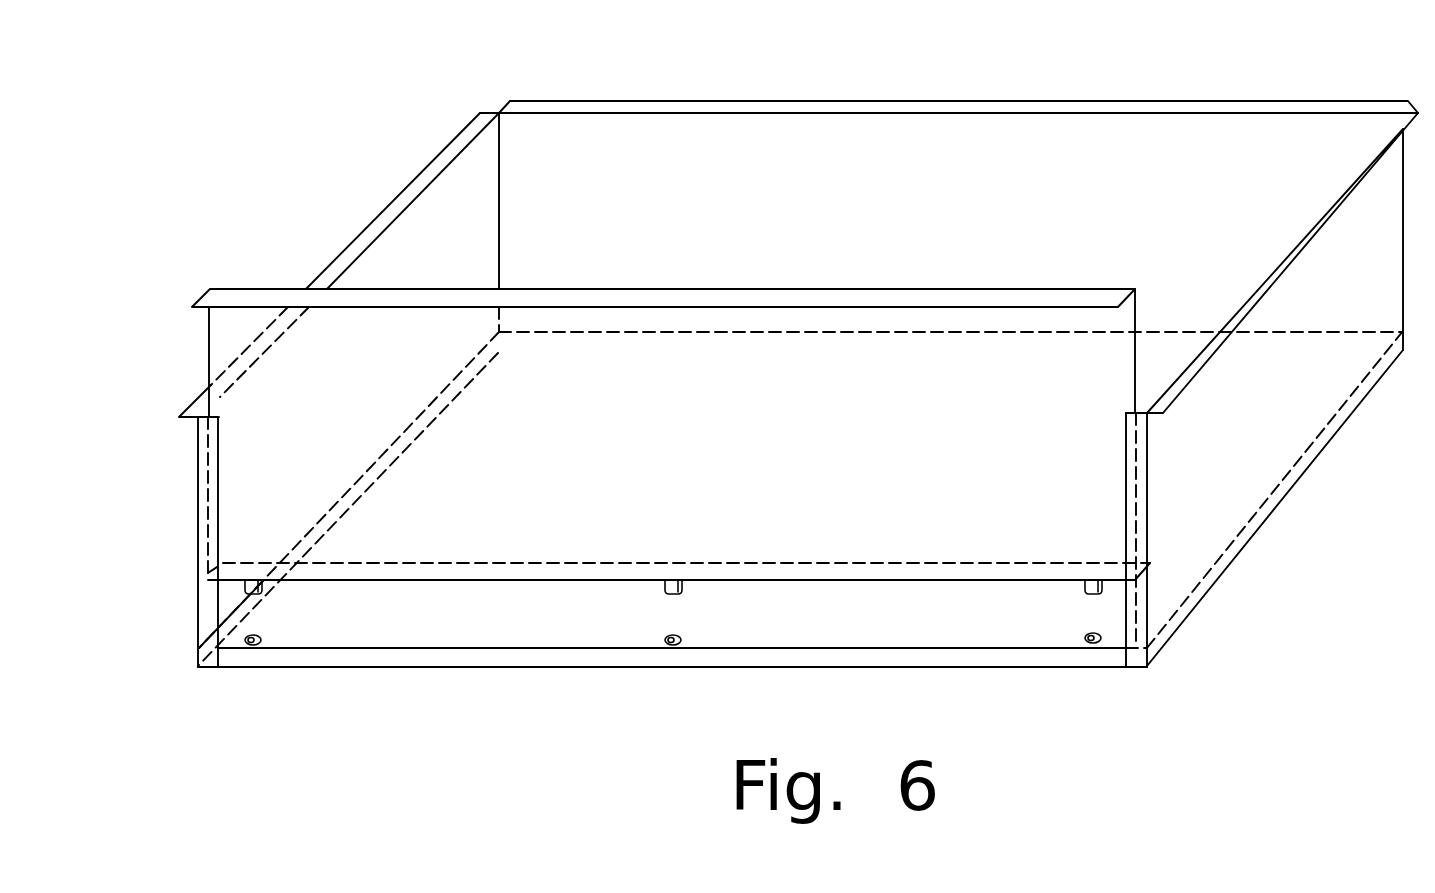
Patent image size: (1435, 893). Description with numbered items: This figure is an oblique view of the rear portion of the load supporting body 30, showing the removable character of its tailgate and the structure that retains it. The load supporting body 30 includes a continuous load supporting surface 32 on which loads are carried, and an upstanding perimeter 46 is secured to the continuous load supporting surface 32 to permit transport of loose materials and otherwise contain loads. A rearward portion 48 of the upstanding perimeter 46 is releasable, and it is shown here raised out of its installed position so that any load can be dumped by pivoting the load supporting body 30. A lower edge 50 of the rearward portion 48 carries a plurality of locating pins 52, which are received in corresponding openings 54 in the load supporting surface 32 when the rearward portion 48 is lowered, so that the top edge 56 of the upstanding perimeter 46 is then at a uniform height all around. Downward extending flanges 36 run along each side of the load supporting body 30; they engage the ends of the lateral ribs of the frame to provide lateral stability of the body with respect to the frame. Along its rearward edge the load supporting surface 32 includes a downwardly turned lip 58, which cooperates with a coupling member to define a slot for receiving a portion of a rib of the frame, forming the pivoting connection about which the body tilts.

The load supporting body 30 is at (262, 142).
The continuous load supporting surface 32 is at (481, 618).
The downward extending flange 36 is at (1283, 490).
The upstanding perimeter 46 is at (423, 220).
The rearward portion 48 is at (258, 481).
The lower edge 50 is at (849, 582).
The locating pin 52 is at (258, 590).
The opening 54 is at (261, 638).
The top edge 56 is at (373, 230).
The downwardly turned lip 58 is at (938, 655).